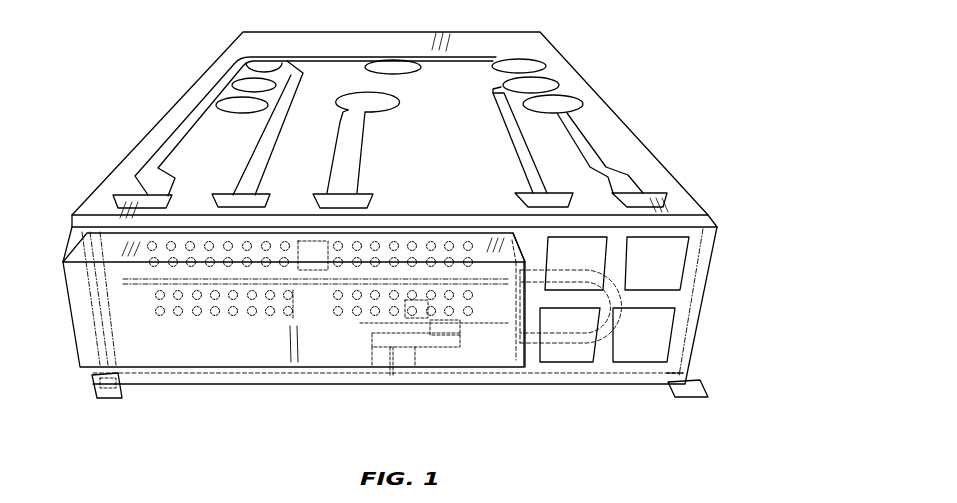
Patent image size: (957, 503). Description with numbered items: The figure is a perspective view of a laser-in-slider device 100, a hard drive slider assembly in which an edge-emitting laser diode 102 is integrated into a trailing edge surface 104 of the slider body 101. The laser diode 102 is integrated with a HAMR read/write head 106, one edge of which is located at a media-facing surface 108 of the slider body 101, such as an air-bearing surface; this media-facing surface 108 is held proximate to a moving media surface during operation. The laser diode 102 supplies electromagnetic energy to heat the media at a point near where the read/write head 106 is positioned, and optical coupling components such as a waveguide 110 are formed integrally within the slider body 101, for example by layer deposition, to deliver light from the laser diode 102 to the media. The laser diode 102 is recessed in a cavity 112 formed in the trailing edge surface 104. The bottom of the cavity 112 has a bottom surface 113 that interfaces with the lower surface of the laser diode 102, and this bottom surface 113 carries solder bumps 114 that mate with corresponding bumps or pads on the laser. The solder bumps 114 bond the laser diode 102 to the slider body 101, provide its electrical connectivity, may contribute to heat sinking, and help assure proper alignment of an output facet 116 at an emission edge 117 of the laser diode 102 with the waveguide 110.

The laser-in-slider device 100 is at (574, 30).
The slider body 101 is at (131, 160).
The edge-emitting laser diode 102 is at (88, 343).
The trailing edge surface 104 is at (112, 400).
The HAMR read/write head 106 is at (402, 372).
The media-facing surface 108 is at (702, 400).
The waveguide 110 is at (577, 345).
The cavity 112 is at (261, 326).
The bottom surface 113 is at (337, 318).
The solder bumps 114 is at (198, 317).
The output facet 116 is at (513, 278).
The emission edge 117 is at (523, 317).